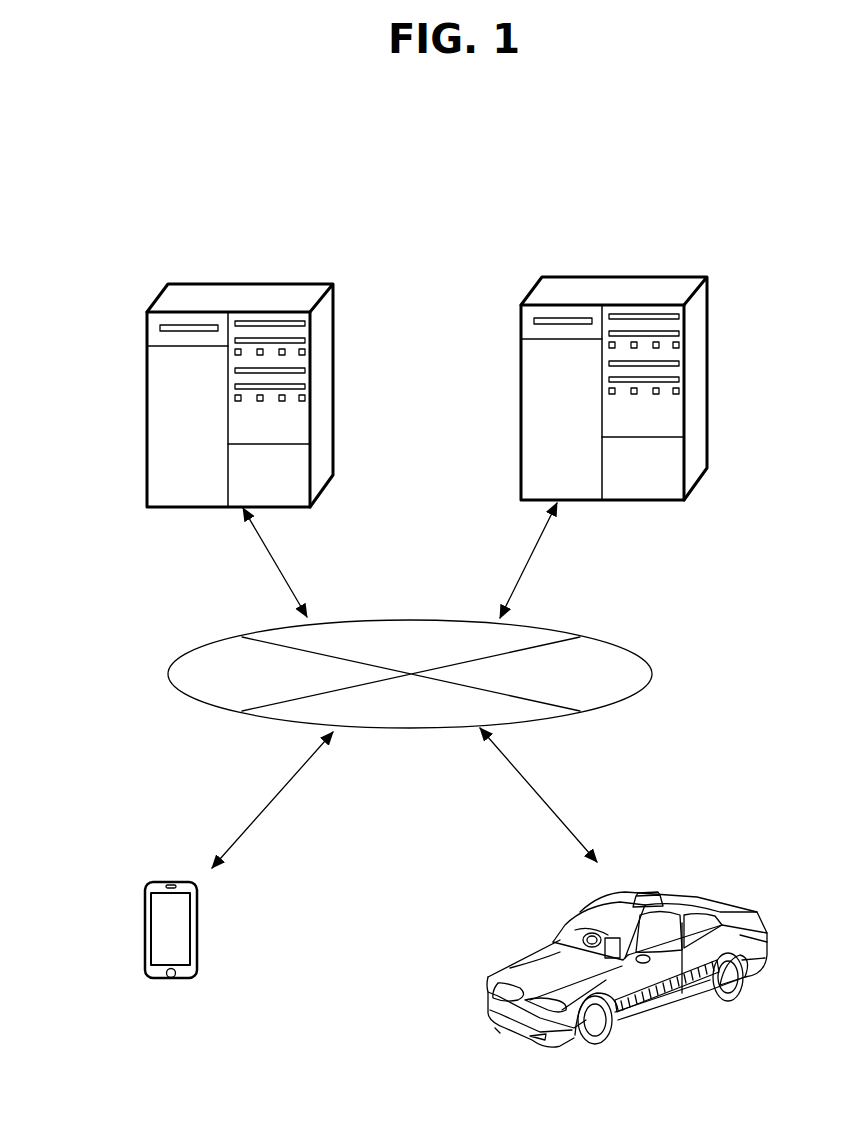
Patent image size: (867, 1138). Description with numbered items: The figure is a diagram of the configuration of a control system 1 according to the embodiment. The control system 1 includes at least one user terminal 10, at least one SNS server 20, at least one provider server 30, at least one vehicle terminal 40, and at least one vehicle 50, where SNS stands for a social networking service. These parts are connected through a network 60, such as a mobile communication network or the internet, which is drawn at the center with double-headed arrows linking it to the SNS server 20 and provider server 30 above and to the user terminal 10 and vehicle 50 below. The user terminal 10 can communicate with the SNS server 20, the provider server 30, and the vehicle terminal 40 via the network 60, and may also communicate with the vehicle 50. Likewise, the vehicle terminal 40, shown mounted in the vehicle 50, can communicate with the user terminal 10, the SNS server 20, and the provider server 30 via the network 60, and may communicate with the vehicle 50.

The control system 1 is at (440, 302).
The user terminal 10 is at (198, 935).
The SNS server 20 is at (147, 447).
The provider server 30 is at (521, 445).
The vehicle terminal 40 is at (575, 925).
The vehicle 50 is at (510, 960).
The network 60 is at (652, 665).